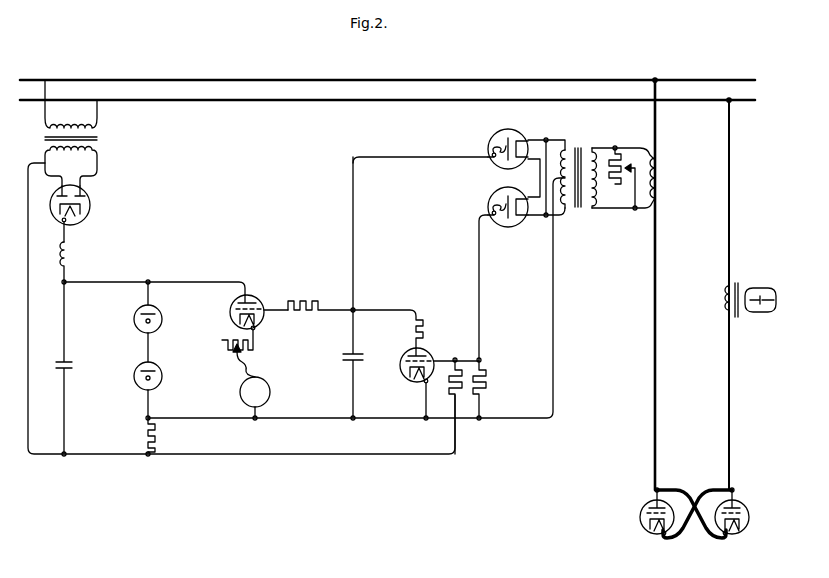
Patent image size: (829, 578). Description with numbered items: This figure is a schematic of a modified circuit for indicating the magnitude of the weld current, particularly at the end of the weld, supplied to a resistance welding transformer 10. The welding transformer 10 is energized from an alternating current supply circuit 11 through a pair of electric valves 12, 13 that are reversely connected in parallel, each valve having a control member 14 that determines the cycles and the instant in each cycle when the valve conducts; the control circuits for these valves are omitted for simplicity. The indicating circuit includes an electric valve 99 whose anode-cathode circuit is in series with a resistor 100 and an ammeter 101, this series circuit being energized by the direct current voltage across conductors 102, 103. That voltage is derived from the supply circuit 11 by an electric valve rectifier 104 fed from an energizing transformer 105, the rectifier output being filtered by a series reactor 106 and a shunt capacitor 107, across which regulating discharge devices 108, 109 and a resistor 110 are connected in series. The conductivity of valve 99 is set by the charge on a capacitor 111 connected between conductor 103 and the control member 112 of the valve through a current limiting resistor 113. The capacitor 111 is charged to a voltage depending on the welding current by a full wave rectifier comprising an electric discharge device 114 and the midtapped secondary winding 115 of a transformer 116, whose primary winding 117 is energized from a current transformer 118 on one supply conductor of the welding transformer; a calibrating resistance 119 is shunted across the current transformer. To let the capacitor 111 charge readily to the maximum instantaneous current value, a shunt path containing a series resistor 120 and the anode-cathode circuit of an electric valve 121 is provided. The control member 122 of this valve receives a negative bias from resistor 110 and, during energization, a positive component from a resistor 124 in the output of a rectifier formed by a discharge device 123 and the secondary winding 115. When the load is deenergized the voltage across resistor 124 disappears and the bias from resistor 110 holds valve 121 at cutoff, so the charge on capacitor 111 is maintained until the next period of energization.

The resistance welding transformer 10 is at (758, 278).
The alternating current supply circuit 11 is at (356, 100).
The electric valve 12 is at (646, 529).
The electric valve 13 is at (748, 525).
The control member 14 is at (646, 511).
The electric valve 99 is at (249, 297).
The resistor 100 is at (229, 338).
The ammeter 101 is at (270, 393).
The conductor 102 is at (196, 282).
The conductor 103 is at (196, 418).
The electric valve rectifier 104 is at (90, 201).
The energizing transformer 105 is at (99, 138).
The series reactor 106 is at (69, 252).
The shunt capacitor 107 is at (74, 366).
The regulating discharge device 108 is at (137, 309).
The regulating discharge device 109 is at (136, 386).
The resistor 110 is at (146, 435).
The capacitor 111 is at (343, 360).
The control member 112 is at (235, 305).
The current limiting resistor 113 is at (306, 314).
The electric discharge device 114 is at (492, 140).
The midtapped secondary winding 115 is at (565, 140).
The transformer 116 is at (597, 137).
The primary winding 117 is at (590, 206).
The current transformer 118 is at (658, 162).
The calibrating resistance 119 is at (620, 178).
The series resistor 120 is at (412, 325).
The electric valve 121 is at (412, 383).
The control member 122 is at (432, 356).
The discharge device 123 is at (508, 228).
The resistor 124 is at (484, 381).